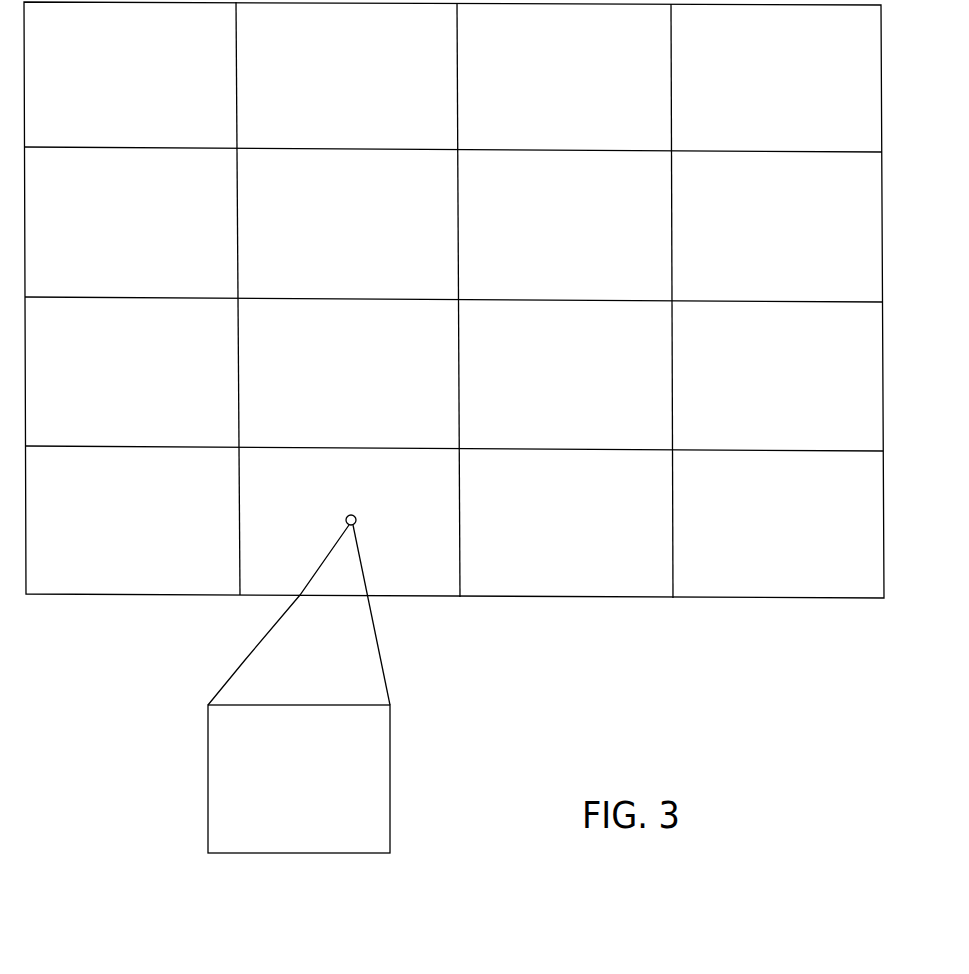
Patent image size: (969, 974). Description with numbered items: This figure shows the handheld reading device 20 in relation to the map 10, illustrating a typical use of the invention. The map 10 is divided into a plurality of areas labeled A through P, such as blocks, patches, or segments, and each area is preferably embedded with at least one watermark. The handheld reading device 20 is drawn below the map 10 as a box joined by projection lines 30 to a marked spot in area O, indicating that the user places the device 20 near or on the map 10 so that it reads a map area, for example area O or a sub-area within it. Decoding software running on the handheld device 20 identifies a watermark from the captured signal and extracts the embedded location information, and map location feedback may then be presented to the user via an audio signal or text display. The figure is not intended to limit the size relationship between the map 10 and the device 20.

The map 10 is at (565, 597).
The handheld reading device 20 is at (300, 853).
The selected cell marker and projection lines 30 is at (299, 610).